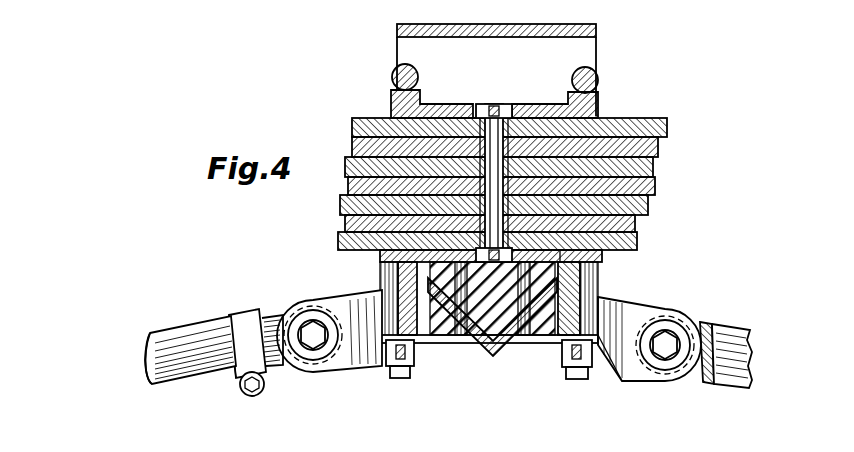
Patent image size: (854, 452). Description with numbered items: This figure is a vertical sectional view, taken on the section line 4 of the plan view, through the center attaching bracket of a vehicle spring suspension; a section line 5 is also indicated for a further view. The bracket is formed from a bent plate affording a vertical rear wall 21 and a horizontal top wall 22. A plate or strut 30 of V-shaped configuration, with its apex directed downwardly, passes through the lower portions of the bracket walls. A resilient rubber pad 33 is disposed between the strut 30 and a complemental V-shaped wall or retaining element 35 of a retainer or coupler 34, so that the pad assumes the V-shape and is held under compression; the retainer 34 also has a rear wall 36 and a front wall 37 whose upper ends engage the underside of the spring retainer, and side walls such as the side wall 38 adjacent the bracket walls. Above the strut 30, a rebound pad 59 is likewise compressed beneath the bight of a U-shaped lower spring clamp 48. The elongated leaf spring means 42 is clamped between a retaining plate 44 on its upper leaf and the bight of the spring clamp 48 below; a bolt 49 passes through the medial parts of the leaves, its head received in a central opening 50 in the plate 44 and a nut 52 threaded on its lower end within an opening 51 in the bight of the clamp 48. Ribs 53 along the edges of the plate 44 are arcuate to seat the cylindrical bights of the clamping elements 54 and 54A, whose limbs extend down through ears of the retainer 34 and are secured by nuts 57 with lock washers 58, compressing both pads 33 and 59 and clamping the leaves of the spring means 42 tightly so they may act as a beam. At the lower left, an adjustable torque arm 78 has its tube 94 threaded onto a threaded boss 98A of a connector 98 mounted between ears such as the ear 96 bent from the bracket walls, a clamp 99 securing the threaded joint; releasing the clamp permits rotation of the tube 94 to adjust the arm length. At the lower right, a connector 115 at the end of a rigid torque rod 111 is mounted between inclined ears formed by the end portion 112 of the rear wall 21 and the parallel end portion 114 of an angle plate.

The section line 4- 4 is at (232, 16).
The section line 5- 5 is at (378, 266).
The rear wall 21 is at (502, 65).
The top wall 22 is at (455, 24).
The plate or strut 30 is at (392, 277).
The resilient pad 33 is at (470, 372).
The retainer or coupler 34 is at (596, 328).
The wall or retaining element 35 is at (493, 358).
The rear wall 36 is at (604, 306).
The front wall 37 is at (397, 304).
The side wall 38 is at (167, 437).
The spring means 42 is at (650, 122).
The retaining plate 44 is at (523, 104).
The lower spring clamp 48 is at (602, 258).
The bolt 49 is at (492, 169).
The opening 50 is at (480, 104).
The opening 51 is at (506, 250).
The nut 52 is at (486, 250).
The ribs 53 is at (390, 97).
The clamping element 54 is at (394, 72).
The clamping element 54A is at (592, 78).
The nuts 57 is at (390, 368).
The lock washers 58 is at (420, 380).
The pad 59 is at (538, 264).
The adjustable torque arm 78 is at (135, 362).
The tube 94 is at (152, 332).
The ear 96 is at (318, 374).
The connector 98 is at (284, 372).
The threaded boss 98A is at (262, 310).
The clamp 99 is at (235, 325).
The rigid torque rod 111 is at (736, 385).
The end portion 112 is at (660, 380).
The end portion 114 is at (698, 320).
The connector 115 is at (708, 378).